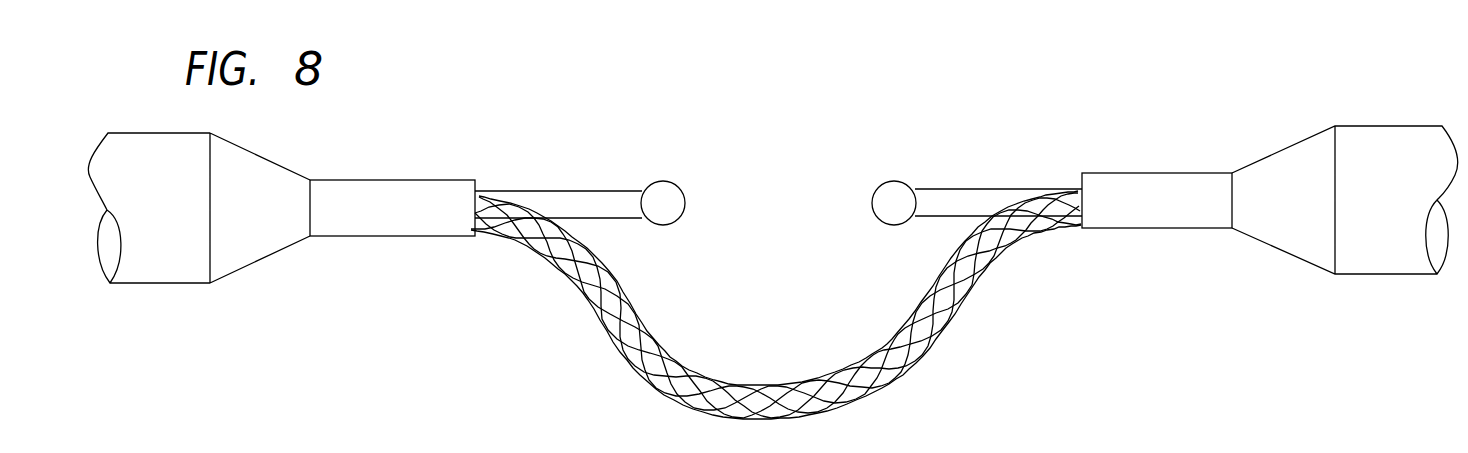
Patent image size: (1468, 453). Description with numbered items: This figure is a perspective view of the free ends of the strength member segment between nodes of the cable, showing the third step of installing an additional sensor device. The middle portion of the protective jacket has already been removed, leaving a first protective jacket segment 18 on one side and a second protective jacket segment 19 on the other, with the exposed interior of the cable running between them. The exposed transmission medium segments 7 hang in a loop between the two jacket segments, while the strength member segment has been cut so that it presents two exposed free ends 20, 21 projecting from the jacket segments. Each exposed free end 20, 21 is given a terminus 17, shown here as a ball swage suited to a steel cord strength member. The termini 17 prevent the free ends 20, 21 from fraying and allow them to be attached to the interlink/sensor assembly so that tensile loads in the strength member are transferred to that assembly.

The transmission medium segments 7 is at (558, 262).
The terminus 17 is at (677, 179).
The first protective jacket segment 18 is at (382, 244).
The second protective jacket segment 19 is at (1157, 235).
The exposed free end 20 is at (541, 189).
The exposed free end 21 is at (993, 183).